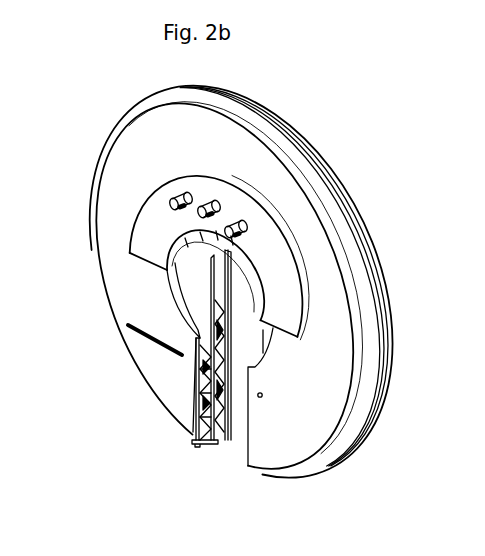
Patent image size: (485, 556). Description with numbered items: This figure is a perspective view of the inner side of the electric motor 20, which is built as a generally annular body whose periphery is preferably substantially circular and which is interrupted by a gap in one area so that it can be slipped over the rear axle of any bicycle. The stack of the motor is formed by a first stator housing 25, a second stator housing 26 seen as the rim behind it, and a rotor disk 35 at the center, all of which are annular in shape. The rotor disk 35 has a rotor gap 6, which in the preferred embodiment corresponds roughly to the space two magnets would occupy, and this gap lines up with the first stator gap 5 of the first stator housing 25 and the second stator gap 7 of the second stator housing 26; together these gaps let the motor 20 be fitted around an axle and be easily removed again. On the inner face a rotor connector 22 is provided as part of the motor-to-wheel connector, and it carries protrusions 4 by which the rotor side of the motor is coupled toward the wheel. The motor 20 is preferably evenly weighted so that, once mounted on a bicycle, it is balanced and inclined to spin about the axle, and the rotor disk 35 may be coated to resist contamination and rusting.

The electric motor 20 is at (224, 300).
The second stator housing 26 is at (342, 188).
The first stator housing 25 is at (160, 370).
The rotor connector 22 is at (152, 238).
The rotor disk 35 is at (198, 293).
The protrusions 4 is at (170, 203).
The first stator gap 5 is at (207, 393).
The rotor gap 6 is at (210, 395).
The second stator gap 7 is at (232, 440).